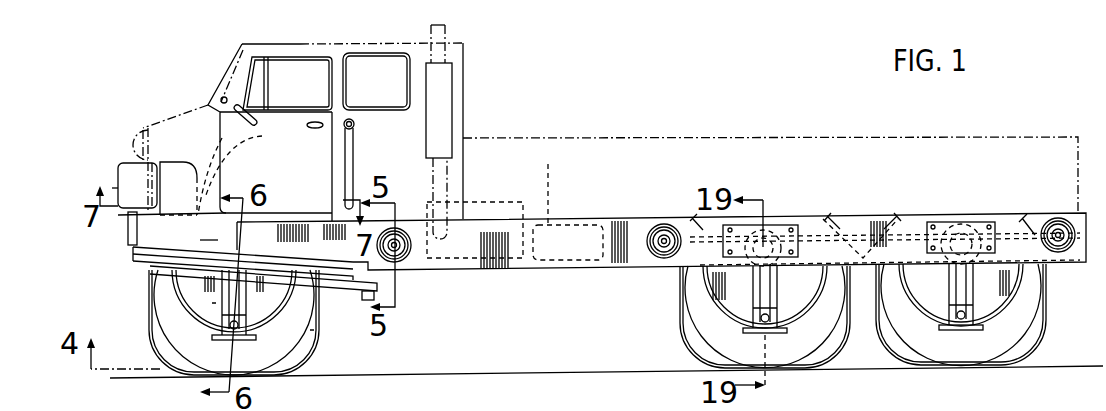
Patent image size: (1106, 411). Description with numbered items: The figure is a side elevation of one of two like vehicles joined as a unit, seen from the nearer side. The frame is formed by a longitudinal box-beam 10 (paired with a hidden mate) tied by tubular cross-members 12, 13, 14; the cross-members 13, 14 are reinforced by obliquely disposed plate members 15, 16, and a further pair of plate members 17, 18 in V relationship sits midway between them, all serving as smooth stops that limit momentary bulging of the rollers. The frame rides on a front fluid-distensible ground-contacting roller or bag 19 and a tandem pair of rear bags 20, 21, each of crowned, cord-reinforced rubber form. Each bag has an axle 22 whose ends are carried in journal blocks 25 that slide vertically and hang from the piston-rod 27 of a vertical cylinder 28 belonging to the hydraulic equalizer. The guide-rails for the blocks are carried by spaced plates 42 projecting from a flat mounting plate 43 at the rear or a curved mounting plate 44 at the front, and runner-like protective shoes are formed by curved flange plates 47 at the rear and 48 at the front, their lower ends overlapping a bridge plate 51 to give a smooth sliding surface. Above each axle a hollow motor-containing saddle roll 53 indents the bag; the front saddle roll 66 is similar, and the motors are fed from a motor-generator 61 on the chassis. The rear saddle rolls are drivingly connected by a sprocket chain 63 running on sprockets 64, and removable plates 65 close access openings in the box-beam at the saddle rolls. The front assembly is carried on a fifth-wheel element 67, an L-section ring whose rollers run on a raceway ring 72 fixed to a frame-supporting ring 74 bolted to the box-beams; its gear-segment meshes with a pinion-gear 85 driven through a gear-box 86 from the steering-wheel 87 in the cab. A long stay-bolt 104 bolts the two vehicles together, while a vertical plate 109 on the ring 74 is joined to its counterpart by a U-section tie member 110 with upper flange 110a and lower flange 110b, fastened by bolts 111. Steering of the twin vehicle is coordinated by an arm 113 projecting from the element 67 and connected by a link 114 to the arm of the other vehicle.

The box-beam 10 is at (632, 218).
The tubular cross-member 12 is at (399, 229).
The tubular cross-member 13 is at (664, 225).
The tubular cross-member 14 is at (1056, 219).
The bracing cross member 15 is at (693, 215).
The bracing cross member 16 is at (1031, 218).
The V-relationship bracing member 17 is at (831, 216).
The V-relationship bracing member 18 is at (893, 216).
The front-end ground-contacting roller or bag 19 is at (317, 357).
The rear-end ground-contacting roller or bag 20 is at (682, 322).
The rear-end ground-contacting roller or bag 21 is at (1044, 328).
The axle 22 is at (230, 331).
The journal block 25 is at (243, 328).
The piston-rod 27 is at (240, 317).
The vertical cylinder 28 is at (221, 287).
The spaced plates 42 is at (220, 316).
The flat mounting plate 43 is at (703, 293).
The curved mounting plate 44 is at (197, 291).
The curved flange plates 47 is at (684, 281).
The curved flange plates 48 is at (213, 304).
The bridge plate 51 is at (243, 330).
The saddle roll 53 is at (782, 233).
The motor-generator 61 is at (518, 202).
The sprocket chain 63 is at (863, 256).
The sprockets 64 is at (761, 230).
The removable plates 65 is at (767, 240).
The front saddle roll 66 is at (163, 265).
The fifth-wheel element 67 is at (133, 262).
The raceway ring 72 is at (132, 252).
The frame-supporting ring 74 is at (133, 234).
The pinion-gear 85 is at (226, 158).
The gear-box 86 is at (258, 137).
The steering-wheel 87 is at (240, 80).
The stay-bolt 104 is at (652, 244).
The vertical plate 109 is at (116, 205).
The tie member 110 is at (130, 224).
The upper flange 110a is at (170, 187).
The lower flange 110b is at (225, 252).
The bolts 111 is at (144, 208).
The steering arm 113 is at (380, 287).
The link 114 is at (376, 297).